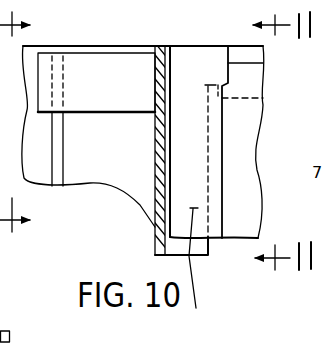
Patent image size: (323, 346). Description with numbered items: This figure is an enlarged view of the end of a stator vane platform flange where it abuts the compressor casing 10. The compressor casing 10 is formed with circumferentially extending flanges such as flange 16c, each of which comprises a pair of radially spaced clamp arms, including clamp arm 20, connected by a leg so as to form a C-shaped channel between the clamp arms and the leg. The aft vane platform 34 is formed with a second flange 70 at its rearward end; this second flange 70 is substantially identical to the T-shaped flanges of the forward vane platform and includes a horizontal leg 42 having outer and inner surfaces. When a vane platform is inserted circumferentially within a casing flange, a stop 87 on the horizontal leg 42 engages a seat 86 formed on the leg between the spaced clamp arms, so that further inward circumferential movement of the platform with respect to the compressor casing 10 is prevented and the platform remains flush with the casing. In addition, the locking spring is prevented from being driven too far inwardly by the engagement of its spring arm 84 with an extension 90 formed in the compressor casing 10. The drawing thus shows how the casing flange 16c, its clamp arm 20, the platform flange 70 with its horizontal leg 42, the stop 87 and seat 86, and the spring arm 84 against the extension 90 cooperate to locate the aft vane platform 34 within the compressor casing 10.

The compressor casing 10 is at (265, 117).
The spring arm 84 is at (114, 89).
The extension 90 is at (64, 132).
The second flange 70 is at (155, 198).
The clamp arm 20 is at (189, 257).
The aft vane platform 34 is at (156, 255).
The horizontal leg 42 is at (204, 269).
The circumferentially extending flange 16c is at (226, 208).
The stop 87 is at (272, 65).
The seat 86 is at (272, 97).